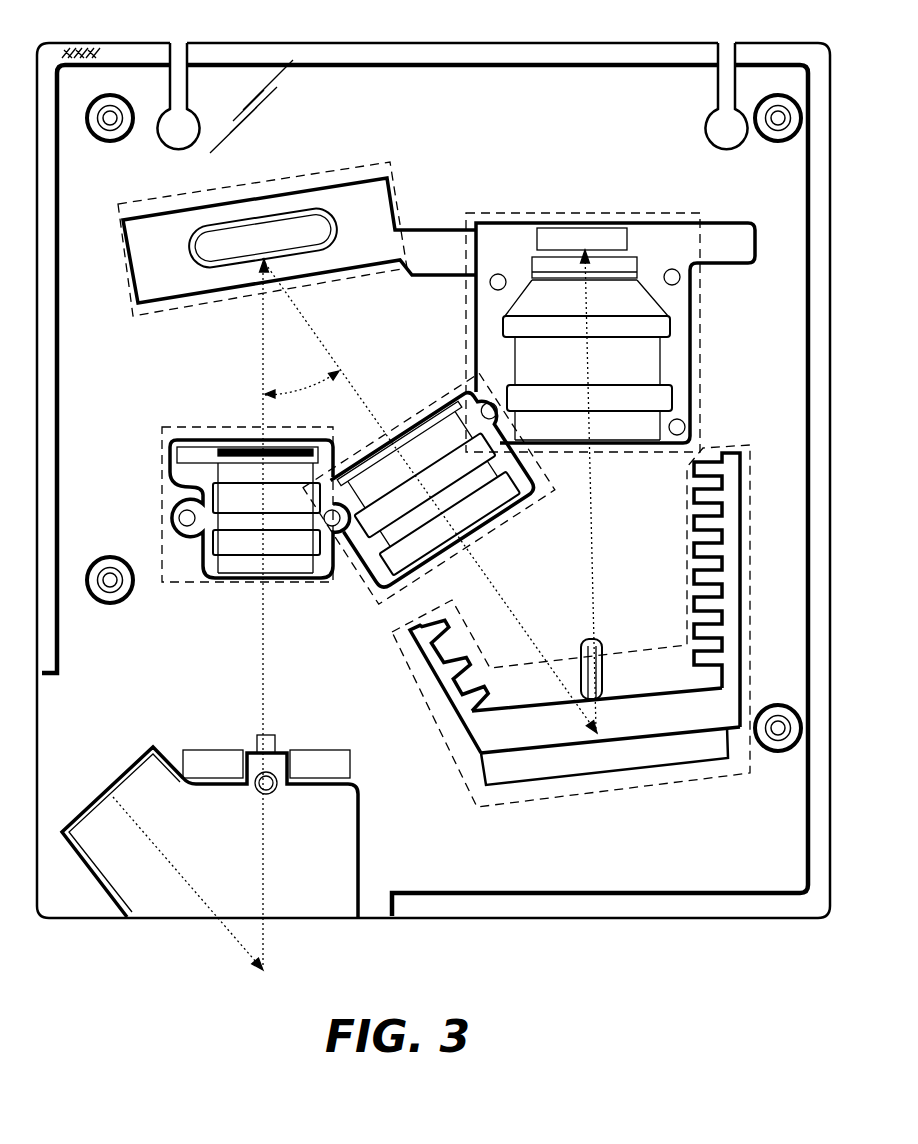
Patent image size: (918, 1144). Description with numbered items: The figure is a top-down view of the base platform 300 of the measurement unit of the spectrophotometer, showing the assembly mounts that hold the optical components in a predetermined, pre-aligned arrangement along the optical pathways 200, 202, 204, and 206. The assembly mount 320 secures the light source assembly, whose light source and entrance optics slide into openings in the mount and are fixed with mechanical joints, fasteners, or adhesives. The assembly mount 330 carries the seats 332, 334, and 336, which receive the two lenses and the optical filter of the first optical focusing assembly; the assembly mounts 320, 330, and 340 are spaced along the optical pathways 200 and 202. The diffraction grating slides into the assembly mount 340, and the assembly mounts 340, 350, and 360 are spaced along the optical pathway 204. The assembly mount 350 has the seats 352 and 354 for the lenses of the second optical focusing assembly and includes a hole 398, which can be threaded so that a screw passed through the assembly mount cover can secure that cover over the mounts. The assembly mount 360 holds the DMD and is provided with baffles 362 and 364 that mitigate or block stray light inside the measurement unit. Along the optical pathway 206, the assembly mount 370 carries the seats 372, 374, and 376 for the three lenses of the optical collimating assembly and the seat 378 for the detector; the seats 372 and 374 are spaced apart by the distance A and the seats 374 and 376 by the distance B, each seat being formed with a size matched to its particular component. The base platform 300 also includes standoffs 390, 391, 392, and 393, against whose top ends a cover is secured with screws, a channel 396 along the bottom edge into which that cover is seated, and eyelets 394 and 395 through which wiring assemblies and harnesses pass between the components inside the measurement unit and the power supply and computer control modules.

The optical pathway 200 is at (172, 865).
The optical pathway 202 is at (262, 352).
The optical pathway 204 is at (312, 322).
The optical pathway 206 is at (590, 507).
The base platform 300 is at (246, 85).
The assembly mount 320 is at (142, 777).
The assembly mount 330 is at (229, 492).
The seat 332 is at (222, 545).
The seat 334 is at (222, 500).
The seat 336 is at (205, 446).
The assembly mount 340 is at (284, 180).
The assembly mount 350 is at (432, 484).
The seat 352 is at (424, 485).
The seat 354 is at (449, 523).
The assembly mount 360 is at (564, 626).
The baffle 362 is at (458, 647).
The baffle 364 is at (697, 557).
The assembly mount 370 is at (627, 321).
The seat 372 is at (664, 398).
The seat 374 is at (660, 322).
The seat 376 is at (556, 266).
The seat 378 is at (560, 234).
The standoff 390 is at (112, 140).
The standoff 391 is at (778, 140).
The standoff 392 is at (112, 565).
The standoff 393 is at (778, 706).
The eyelet 394 is at (183, 138).
The eyelet 395 is at (726, 138).
The channel 396 is at (78, 52).
The hole 398 is at (489, 411).